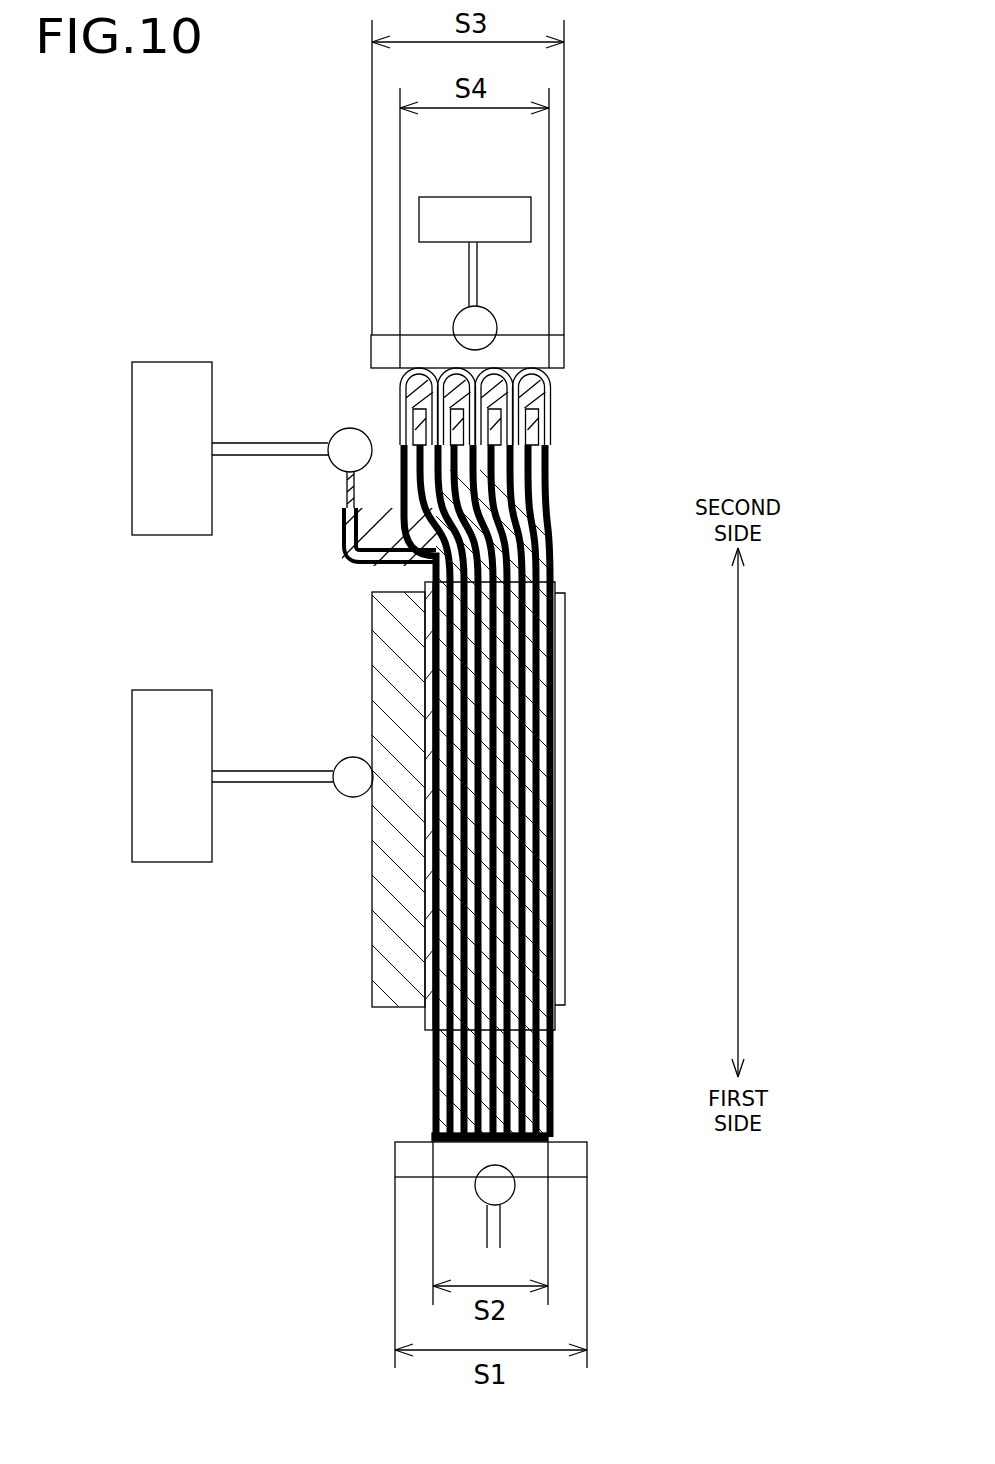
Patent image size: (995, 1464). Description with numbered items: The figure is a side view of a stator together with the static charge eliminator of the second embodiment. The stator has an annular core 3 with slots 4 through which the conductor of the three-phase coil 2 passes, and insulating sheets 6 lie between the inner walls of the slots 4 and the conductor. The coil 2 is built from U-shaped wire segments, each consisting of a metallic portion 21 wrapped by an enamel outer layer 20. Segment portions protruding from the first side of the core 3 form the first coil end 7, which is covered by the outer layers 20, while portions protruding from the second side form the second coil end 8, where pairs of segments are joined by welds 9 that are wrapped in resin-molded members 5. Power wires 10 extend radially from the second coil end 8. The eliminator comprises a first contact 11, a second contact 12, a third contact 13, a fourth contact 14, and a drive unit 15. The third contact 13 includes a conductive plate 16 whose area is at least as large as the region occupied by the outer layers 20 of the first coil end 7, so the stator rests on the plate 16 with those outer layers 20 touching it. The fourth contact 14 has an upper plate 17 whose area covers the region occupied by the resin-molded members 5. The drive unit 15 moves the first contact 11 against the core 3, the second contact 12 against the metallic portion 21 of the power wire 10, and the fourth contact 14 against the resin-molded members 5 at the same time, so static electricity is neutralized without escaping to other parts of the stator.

The coil 2 is at (561, 753).
The core 3 is at (378, 877).
The slots 4 is at (426, 930).
The resin-molded members 5 is at (401, 378).
The insulating sheets 6 is at (428, 990).
The first coil end 7 is at (580, 1090).
The second coil end 8 is at (569, 511).
The welds 9 is at (402, 395).
The power wires 10 is at (328, 538).
The first contact 11 is at (350, 768).
The second contact 12 is at (346, 443).
The third contact 13 is at (482, 1188).
The fourth contact 14 is at (484, 330).
The drive unit 15 is at (440, 196).
The plate 16 is at (406, 1160).
The upper plate 17 is at (380, 348).
The outer layer 20 is at (362, 565).
The metallic portion 21 is at (346, 490).